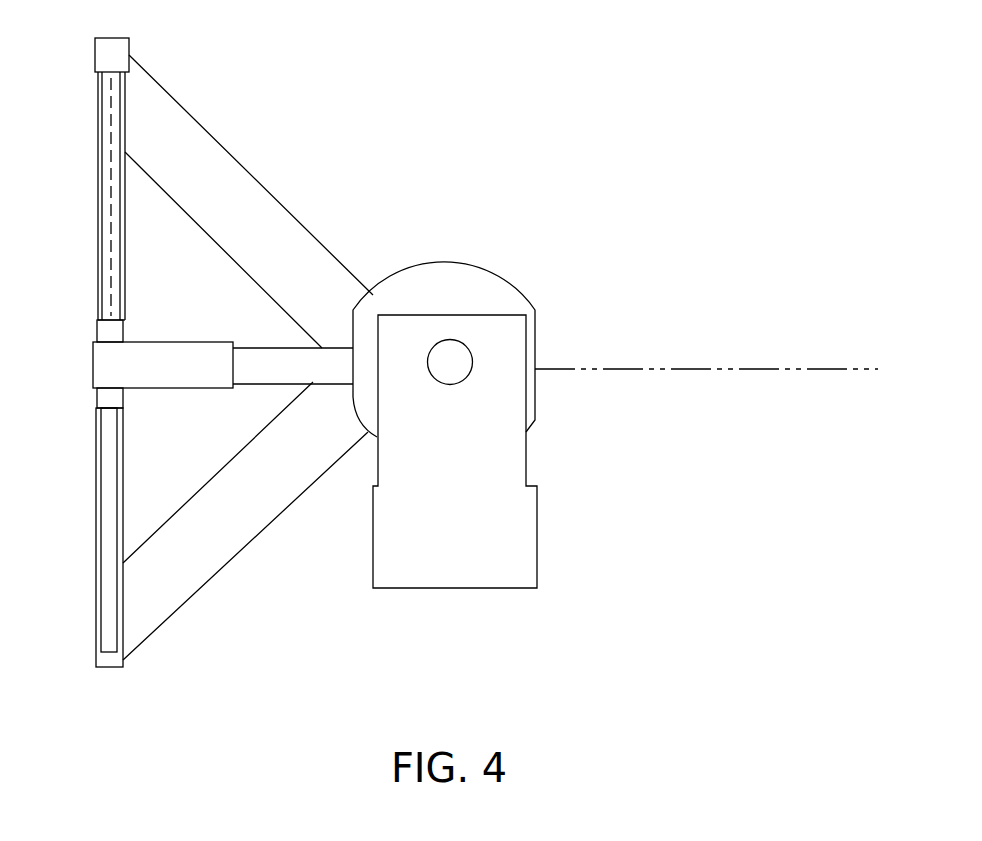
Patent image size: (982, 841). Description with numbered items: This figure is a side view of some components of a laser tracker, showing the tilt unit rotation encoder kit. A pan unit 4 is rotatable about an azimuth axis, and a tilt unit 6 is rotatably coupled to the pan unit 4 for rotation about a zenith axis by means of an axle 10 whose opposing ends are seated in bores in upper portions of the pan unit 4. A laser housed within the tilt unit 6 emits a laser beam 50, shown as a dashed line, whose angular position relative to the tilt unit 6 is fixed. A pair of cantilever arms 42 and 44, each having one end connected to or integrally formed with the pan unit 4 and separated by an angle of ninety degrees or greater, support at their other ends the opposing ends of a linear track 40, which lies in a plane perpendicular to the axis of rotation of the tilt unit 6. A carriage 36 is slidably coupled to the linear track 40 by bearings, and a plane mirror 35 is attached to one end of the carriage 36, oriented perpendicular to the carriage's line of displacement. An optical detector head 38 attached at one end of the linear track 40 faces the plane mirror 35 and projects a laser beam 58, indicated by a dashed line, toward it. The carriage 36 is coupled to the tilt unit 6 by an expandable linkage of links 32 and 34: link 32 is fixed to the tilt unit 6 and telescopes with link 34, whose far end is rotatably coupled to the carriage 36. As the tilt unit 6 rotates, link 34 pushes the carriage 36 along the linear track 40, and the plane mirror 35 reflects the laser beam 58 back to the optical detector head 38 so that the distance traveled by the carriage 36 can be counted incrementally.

The pan unit 4 is at (375, 540).
The tilt unit 6 is at (449, 261).
The axle 10 is at (450, 385).
The link 32 is at (270, 348).
The link 34 is at (155, 350).
The plane mirror 35 is at (102, 322).
The carriage 36 is at (97, 335).
The optical detector head 38 is at (93, 56).
The linear track 40 is at (96, 470).
The cantilever arm 42 is at (208, 130).
The cantilever arm 44 is at (200, 588).
The laser beam 50 is at (657, 369).
The laser beam 58 is at (108, 148).